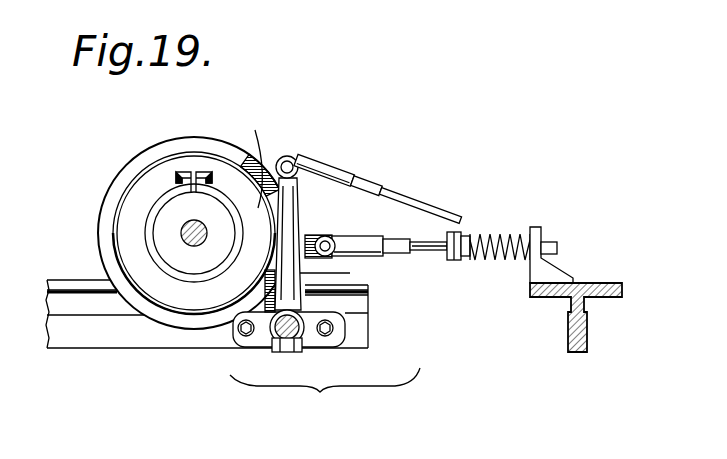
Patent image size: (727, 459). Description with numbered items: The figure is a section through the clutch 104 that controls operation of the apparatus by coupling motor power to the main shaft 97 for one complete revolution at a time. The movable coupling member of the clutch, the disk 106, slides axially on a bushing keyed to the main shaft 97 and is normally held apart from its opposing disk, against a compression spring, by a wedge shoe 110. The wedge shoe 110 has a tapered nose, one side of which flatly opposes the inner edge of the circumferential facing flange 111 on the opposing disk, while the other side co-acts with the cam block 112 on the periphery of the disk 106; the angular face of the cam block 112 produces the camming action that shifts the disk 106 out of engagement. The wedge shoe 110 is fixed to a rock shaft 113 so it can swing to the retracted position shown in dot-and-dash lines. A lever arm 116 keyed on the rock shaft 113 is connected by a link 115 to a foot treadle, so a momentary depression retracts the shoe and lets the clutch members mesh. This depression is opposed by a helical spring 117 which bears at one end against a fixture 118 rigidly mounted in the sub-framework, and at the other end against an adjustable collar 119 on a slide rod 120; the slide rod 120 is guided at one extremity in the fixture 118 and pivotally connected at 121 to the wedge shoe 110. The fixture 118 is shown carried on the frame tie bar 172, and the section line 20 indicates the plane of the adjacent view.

The section line 20 is at (62, 258).
The main shaft 97 is at (181, 228).
The clutch 104 is at (325, 342).
The clutch disk 106 is at (165, 298).
The wedge shoe 110 is at (263, 168).
The circumferential facing flange 111 is at (145, 152).
The cam block 112 is at (258, 208).
The rock shaft 113 is at (303, 345).
The link 115 is at (378, 189).
The lever arm 116 is at (330, 270).
The helical spring 117 is at (500, 235).
The fixture 118 is at (535, 228).
The adjustable collar 119 is at (463, 262).
The slide rod 120 is at (428, 252).
The pivotal connection 121 is at (332, 239).
The frame tie bar 172 is at (568, 340).